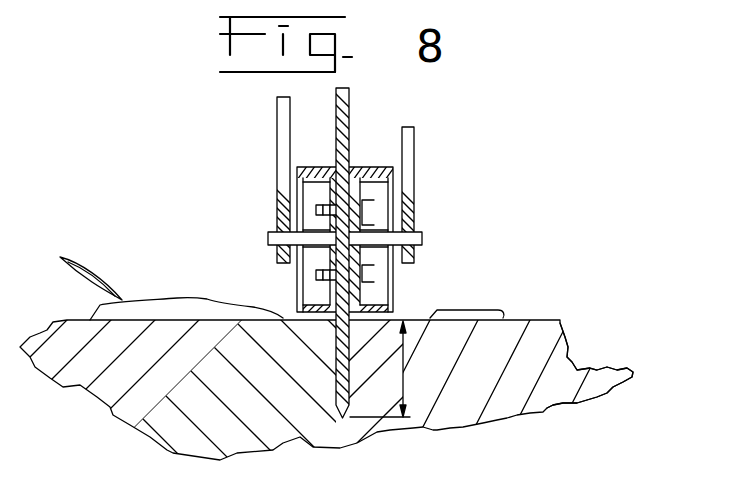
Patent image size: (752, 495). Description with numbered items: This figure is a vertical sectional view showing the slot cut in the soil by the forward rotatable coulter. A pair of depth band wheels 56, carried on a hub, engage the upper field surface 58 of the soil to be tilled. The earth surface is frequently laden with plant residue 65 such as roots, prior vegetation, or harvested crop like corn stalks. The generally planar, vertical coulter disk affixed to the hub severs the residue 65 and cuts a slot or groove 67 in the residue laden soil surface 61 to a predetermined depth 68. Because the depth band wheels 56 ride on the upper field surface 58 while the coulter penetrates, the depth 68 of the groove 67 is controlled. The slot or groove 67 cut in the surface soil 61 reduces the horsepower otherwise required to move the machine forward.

The depth band wheels 56 is at (390, 167).
The upper field surface 58 is at (520, 317).
The residue laden soil surface 61 is at (560, 377).
The plant residue 65 is at (137, 312).
The slot or groove 67 is at (336, 398).
The predetermined depth 68 is at (404, 397).